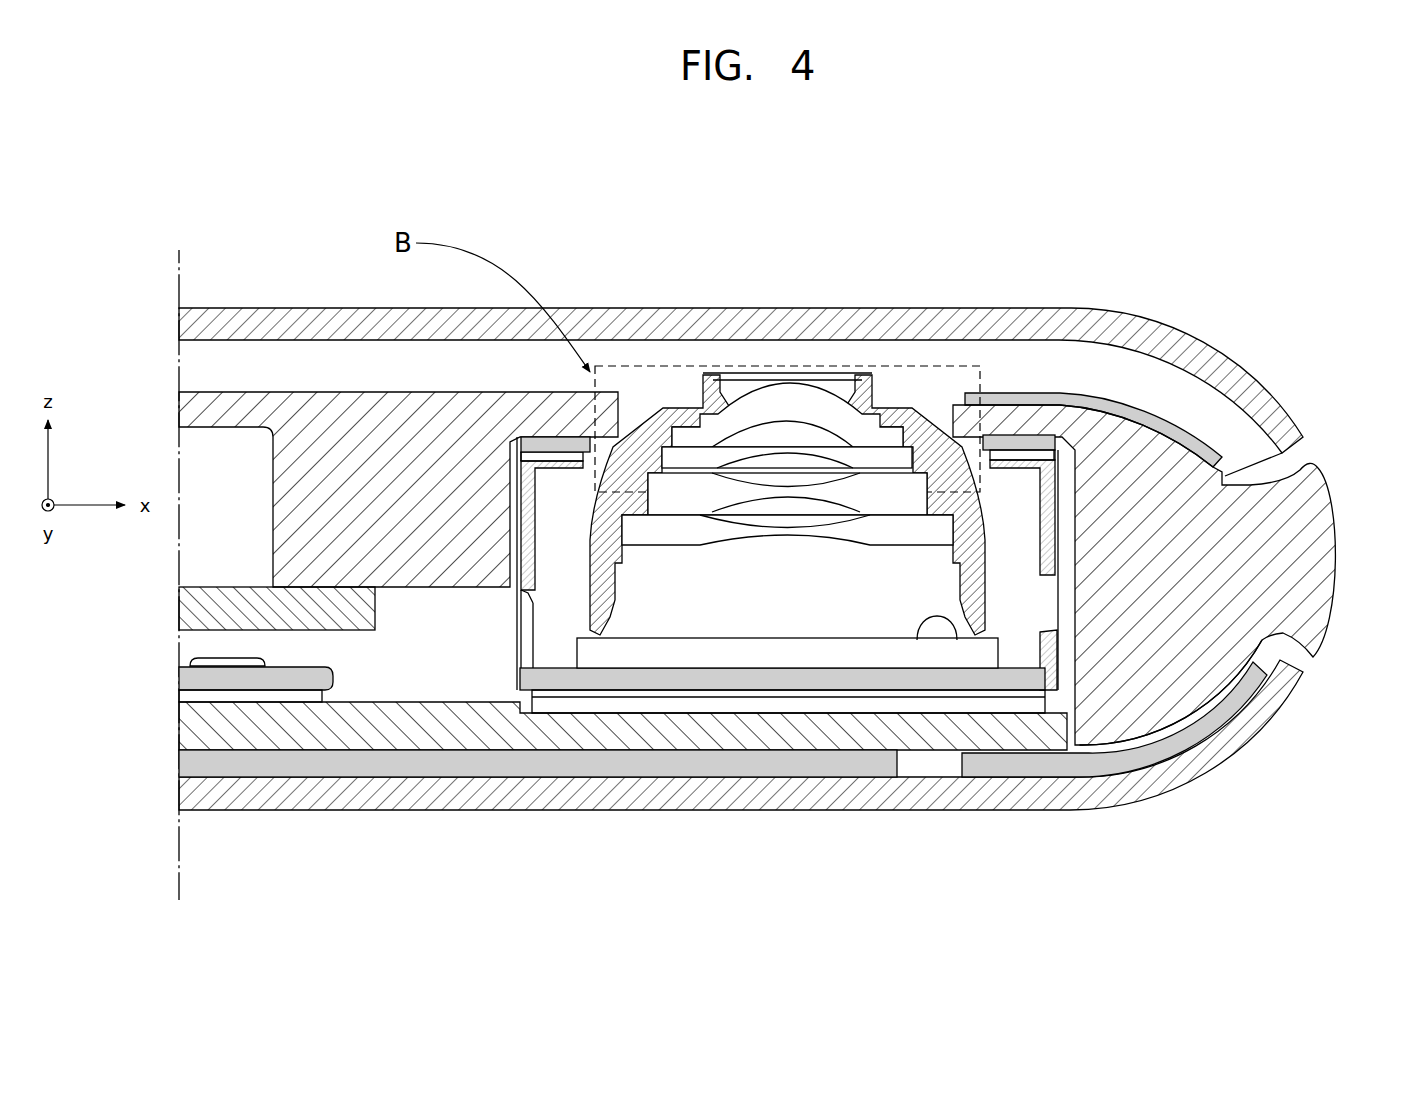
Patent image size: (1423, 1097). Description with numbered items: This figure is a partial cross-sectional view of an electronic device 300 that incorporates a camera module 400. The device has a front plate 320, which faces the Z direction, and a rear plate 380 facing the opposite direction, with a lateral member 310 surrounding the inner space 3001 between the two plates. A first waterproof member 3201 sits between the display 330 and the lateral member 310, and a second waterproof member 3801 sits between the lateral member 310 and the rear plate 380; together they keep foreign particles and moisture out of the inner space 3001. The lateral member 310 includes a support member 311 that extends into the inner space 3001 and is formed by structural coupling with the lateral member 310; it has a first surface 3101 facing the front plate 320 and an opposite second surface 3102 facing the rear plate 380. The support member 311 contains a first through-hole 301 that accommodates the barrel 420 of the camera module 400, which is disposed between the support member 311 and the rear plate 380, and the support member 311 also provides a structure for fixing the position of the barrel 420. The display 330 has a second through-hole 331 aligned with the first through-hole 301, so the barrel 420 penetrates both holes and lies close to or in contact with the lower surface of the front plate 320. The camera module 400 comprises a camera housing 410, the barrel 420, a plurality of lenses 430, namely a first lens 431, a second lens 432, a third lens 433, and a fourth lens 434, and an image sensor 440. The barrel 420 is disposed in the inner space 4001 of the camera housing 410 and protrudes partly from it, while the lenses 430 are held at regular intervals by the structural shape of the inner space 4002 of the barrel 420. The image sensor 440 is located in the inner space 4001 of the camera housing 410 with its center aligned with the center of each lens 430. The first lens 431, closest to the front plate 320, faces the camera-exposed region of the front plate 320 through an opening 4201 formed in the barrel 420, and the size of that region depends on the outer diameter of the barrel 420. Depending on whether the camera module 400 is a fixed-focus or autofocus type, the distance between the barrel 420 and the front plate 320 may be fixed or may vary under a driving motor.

The electronic device 300 is at (1253, 282).
The first through-hole 301 is at (656, 403).
The lateral member 310 is at (1300, 558).
The support member 311 is at (314, 536).
The front plate 320 is at (570, 323).
The display 330 is at (628, 392).
The second through-hole 331 is at (796, 356).
The rear plate 380 is at (527, 812).
The camera module 400 is at (927, 407).
The camera housing 410 is at (518, 582).
The barrel 420 is at (895, 404).
The plurality of lenses 430 is at (920, 908).
The first lens 431 is at (740, 410).
The second lens 432 is at (762, 450).
The third lens 433 is at (795, 492).
The fourth lens 434 is at (835, 522).
The image sensor 440 is at (938, 622).
The inner space 3001 is at (415, 622).
The first surface 3101 is at (1023, 400).
The second surface 3102 is at (1030, 742).
The first waterproof member 3201 is at (1180, 432).
The second waterproof member 3801 is at (1115, 765).
The inner space of the camera housing 4001 is at (575, 594).
The inner space of the barrel 4002 is at (672, 594).
The opening 4201 is at (852, 384).